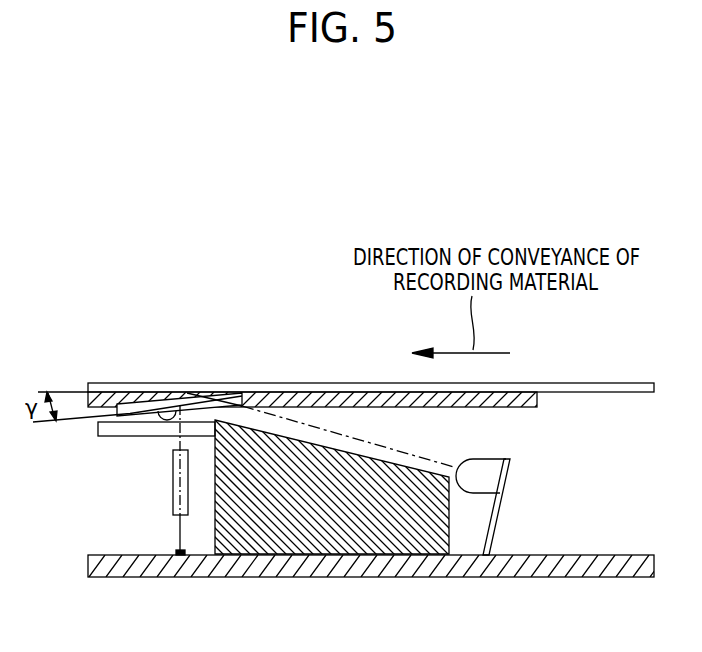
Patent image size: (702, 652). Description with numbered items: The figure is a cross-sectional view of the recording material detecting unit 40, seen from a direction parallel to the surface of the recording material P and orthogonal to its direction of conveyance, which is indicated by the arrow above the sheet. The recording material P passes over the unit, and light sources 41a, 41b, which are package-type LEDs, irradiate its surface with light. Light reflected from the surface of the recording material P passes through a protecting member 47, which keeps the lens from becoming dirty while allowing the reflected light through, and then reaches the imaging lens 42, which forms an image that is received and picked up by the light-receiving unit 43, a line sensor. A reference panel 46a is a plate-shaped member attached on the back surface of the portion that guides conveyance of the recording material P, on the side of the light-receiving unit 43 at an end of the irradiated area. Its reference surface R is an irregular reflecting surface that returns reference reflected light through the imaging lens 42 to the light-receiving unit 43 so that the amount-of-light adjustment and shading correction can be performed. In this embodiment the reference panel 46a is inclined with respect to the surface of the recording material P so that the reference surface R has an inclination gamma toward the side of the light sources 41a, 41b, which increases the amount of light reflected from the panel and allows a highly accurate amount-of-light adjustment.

The recording material P is at (303, 383).
The reference surface R is at (180, 405).
The reference panel 46a is at (130, 404).
The protecting member 47 is at (108, 437).
The imaging lens 42 is at (173, 478).
The light-receiving unit 43 is at (176, 551).
The recording material detecting unit 40 is at (303, 578).
The light source 41a is at (507, 468).
The light source 41b is at (555, 506).